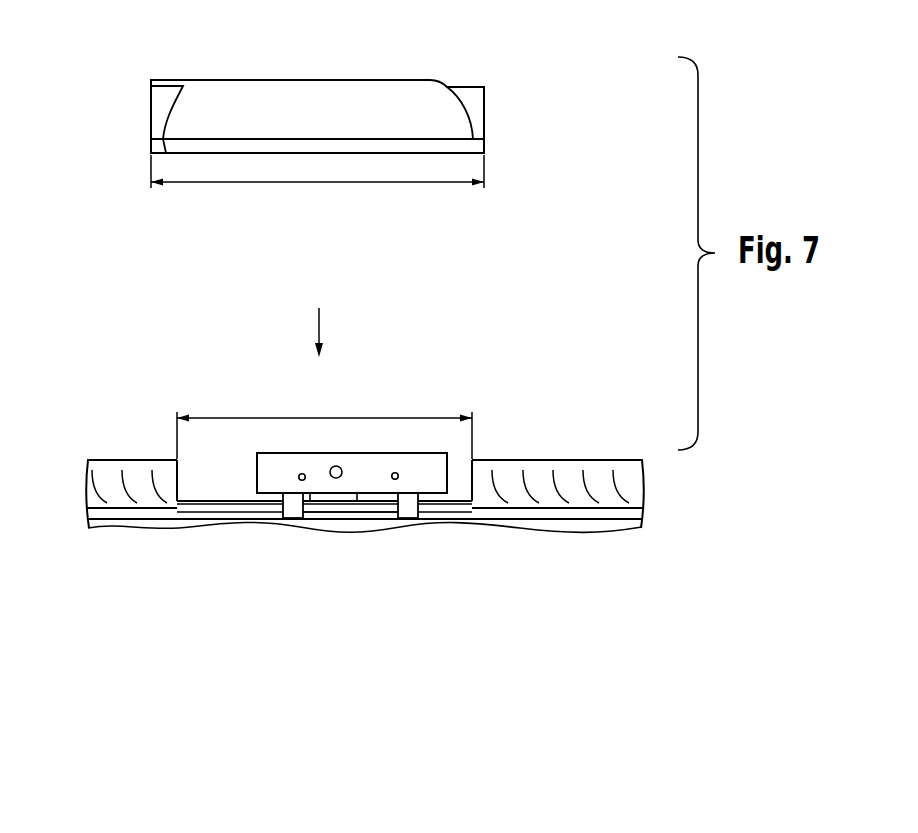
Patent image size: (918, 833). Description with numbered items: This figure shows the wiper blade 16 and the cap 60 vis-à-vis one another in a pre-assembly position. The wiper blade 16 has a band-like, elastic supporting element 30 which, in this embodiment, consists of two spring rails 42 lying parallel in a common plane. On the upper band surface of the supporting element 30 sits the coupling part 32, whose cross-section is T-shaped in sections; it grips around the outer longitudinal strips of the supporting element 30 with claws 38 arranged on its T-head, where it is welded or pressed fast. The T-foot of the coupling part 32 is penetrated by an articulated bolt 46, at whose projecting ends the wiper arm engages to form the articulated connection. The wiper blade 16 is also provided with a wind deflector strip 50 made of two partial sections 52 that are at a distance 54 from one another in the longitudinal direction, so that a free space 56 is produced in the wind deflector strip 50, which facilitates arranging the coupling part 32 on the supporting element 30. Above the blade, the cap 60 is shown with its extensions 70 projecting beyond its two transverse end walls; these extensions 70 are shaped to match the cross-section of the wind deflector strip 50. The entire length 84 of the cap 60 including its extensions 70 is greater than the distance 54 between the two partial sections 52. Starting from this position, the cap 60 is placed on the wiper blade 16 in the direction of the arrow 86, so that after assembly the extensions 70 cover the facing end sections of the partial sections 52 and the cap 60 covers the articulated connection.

The wiper blade 16 is at (254, 538).
The supporting element 30 is at (379, 530).
The coupling part 32 is at (270, 444).
The claws 38 is at (293, 512).
The spring rails 42 is at (347, 504).
The articulated bolt 46 is at (342, 466).
The wind deflector strip 50 is at (358, 447).
The partial sections 52 is at (137, 470).
The distance 54 is at (310, 418).
The free space 56 is at (190, 480).
The cap 60 is at (472, 75).
The extensions 70 is at (163, 103).
The entire length 84 is at (296, 183).
The arrow 86 is at (319, 323).